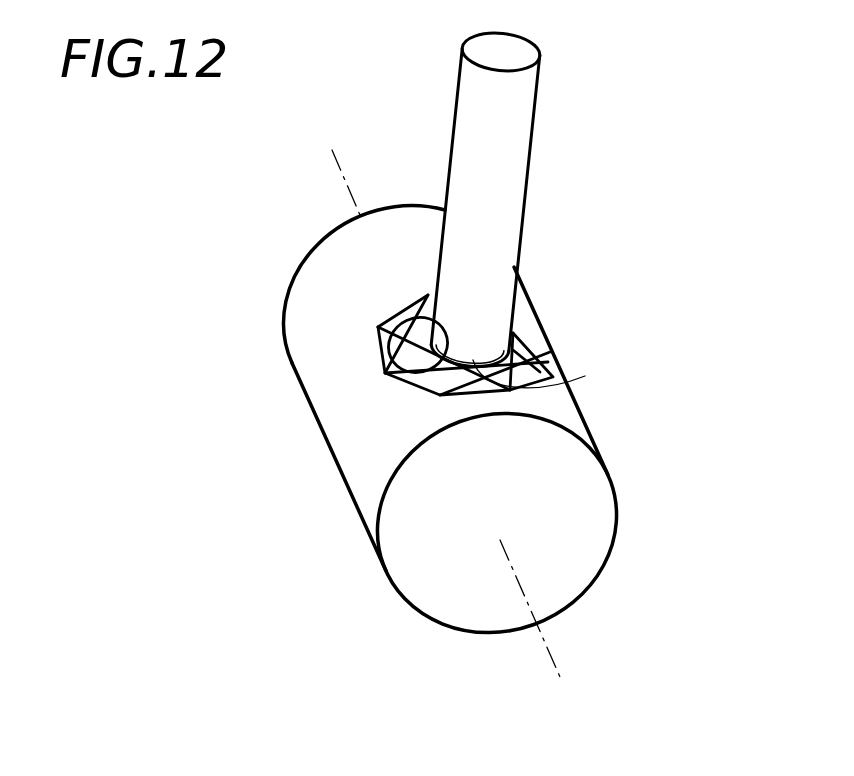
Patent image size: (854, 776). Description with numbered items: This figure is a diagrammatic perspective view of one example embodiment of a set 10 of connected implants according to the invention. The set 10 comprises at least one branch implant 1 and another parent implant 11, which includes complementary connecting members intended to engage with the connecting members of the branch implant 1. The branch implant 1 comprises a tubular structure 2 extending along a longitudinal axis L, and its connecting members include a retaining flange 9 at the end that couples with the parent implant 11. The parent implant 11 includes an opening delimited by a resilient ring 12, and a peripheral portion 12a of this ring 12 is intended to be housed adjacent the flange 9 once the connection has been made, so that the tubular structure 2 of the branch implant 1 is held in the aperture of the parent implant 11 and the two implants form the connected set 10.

The branch implant 1 is at (534, 191).
The tubular structure 2 is at (497, 206).
The retaining flange 9 is at (477, 358).
The set of connected implants 10 is at (433, 419).
The parent implant 11 is at (320, 436).
The resilient ring 12 is at (460, 357).
The peripheral portion 12a is at (585, 376).
The longitudinal axis L is at (548, 648).